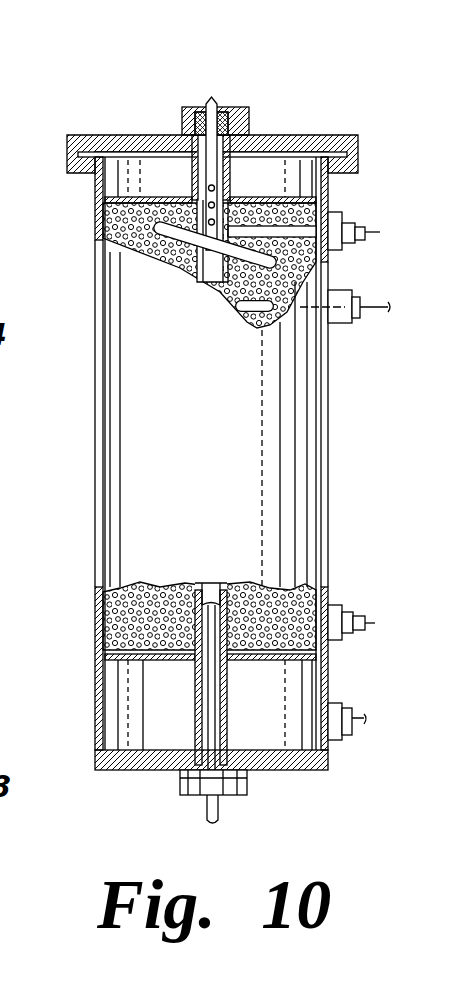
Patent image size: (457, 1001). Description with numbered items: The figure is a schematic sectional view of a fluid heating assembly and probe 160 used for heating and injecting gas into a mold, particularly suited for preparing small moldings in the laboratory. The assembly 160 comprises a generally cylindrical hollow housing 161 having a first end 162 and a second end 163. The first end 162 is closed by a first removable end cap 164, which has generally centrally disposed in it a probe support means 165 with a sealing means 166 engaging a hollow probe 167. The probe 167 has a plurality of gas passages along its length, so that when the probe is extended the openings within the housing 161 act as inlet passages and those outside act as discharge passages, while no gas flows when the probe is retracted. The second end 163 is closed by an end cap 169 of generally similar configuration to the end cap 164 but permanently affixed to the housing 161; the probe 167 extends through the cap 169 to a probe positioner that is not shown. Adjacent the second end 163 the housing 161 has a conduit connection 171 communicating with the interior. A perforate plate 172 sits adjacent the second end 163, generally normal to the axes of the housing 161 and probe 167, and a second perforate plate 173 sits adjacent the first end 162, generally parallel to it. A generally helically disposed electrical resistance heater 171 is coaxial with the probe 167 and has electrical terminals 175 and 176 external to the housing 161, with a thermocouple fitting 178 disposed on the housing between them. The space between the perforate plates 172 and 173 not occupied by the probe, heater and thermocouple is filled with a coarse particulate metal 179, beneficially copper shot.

The fluid heating assembly and probe 160 is at (230, 433).
The hollow housing 161 is at (97, 608).
The first end 162 is at (329, 182).
The second end 163 is at (97, 695).
The first removable end cap 164 is at (296, 141).
The probe support means 165 is at (184, 130).
The sealing means 166 is at (222, 118).
The hollow probe 167 is at (204, 106).
The end cap 169 is at (140, 757).
The conduit connection 171 is at (178, 238).
The perforate plate 172 is at (128, 655).
The second perforate plate 173 is at (122, 199).
The electrical terminal 175 is at (376, 229).
The electrical terminal 176 is at (358, 636).
The thermocouple fitting 178 is at (340, 318).
The coarse particulate metal 179 is at (330, 260).